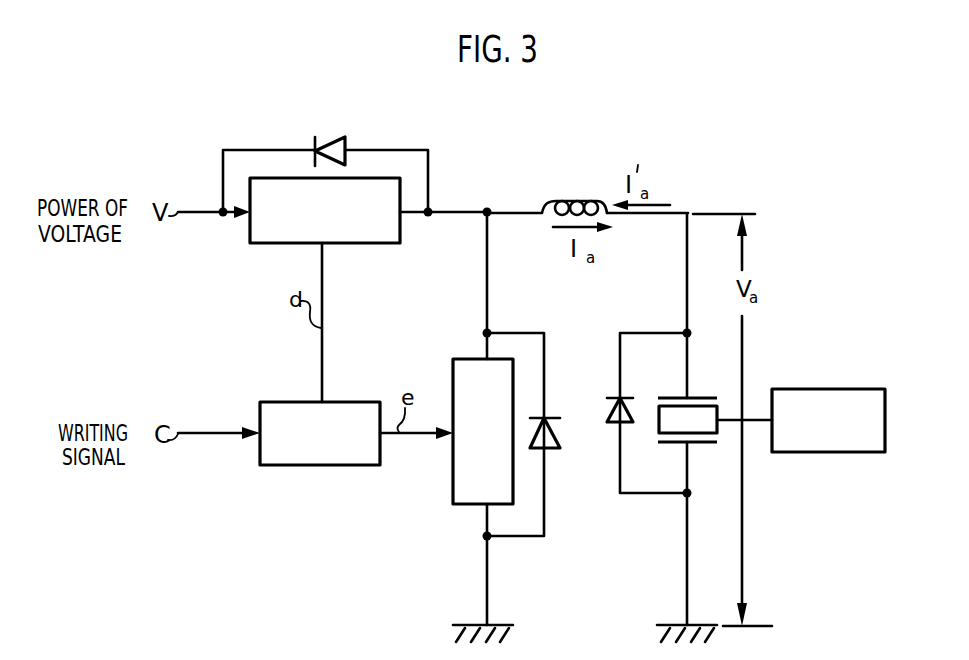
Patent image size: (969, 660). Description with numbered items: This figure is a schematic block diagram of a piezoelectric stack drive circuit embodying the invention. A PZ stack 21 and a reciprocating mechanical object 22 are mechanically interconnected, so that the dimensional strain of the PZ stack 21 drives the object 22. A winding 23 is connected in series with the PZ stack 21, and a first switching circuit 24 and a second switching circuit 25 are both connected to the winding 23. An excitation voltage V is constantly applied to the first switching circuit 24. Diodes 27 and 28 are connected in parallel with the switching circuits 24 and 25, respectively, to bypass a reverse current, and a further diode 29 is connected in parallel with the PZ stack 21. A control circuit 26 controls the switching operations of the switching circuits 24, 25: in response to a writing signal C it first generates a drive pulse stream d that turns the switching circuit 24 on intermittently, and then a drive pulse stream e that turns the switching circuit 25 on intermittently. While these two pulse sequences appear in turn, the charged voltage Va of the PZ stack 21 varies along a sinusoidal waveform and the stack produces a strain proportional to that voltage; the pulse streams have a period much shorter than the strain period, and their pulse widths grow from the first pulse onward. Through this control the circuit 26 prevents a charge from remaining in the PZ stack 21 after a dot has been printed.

The PZ stack 21 is at (710, 369).
The reciprocating mechanical object 22 is at (826, 389).
The winding 23 is at (571, 200).
The first switching circuit 24 is at (393, 244).
The second switching circuit 25 is at (452, 470).
The control circuit 26 is at (364, 466).
The diode 27 is at (324, 142).
The diode 28 is at (565, 446).
The diode 29 is at (610, 412).